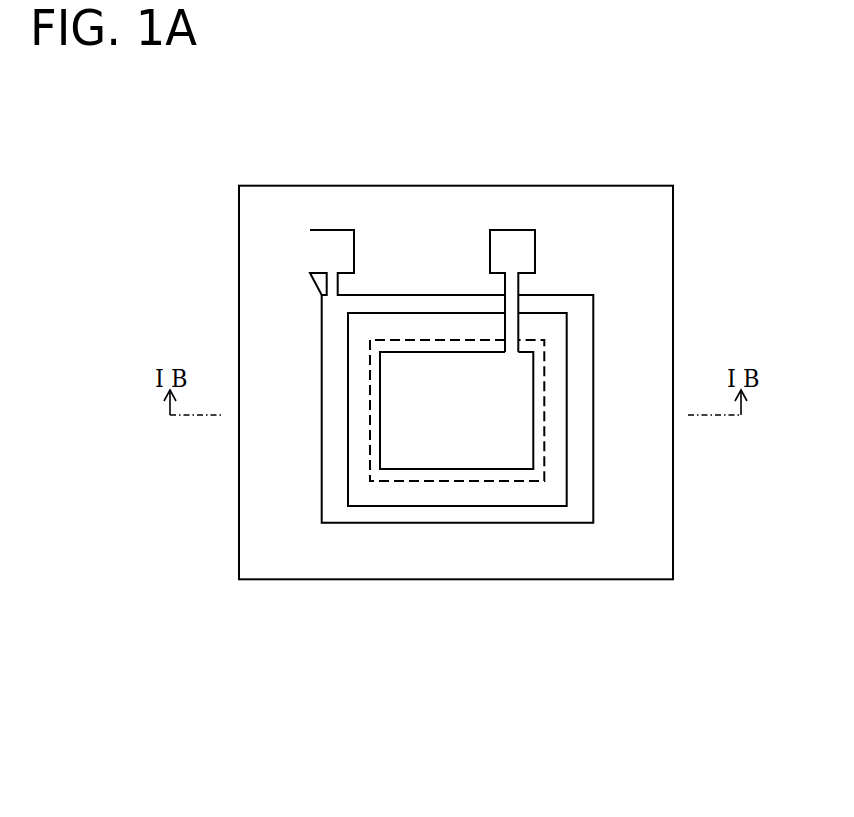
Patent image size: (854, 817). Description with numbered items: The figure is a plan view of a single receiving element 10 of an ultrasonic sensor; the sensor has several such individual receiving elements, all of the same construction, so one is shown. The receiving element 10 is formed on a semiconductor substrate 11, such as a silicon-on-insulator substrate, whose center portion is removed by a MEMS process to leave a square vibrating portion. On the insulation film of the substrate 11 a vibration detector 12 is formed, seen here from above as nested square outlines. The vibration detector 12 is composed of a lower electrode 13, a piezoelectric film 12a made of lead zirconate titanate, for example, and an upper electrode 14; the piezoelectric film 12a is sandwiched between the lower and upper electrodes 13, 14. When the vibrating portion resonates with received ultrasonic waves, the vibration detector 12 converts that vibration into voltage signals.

The receiving element 10 is at (648, 159).
The semiconductor substrate 11 is at (665, 473).
The vibration detector 12 is at (375, 523).
The piezoelectric film 12a is at (501, 497).
The lower electrode 13 is at (430, 303).
The upper electrode 14 is at (513, 382).